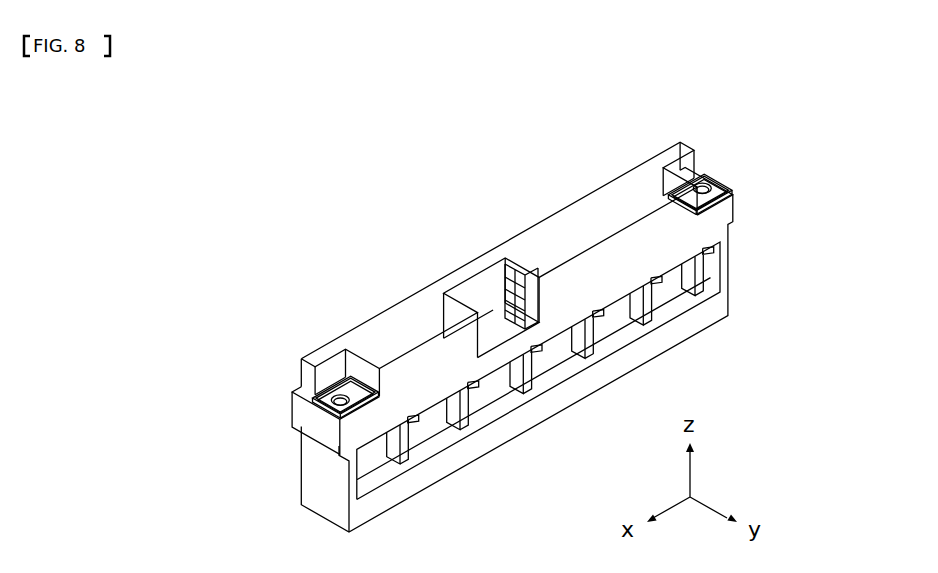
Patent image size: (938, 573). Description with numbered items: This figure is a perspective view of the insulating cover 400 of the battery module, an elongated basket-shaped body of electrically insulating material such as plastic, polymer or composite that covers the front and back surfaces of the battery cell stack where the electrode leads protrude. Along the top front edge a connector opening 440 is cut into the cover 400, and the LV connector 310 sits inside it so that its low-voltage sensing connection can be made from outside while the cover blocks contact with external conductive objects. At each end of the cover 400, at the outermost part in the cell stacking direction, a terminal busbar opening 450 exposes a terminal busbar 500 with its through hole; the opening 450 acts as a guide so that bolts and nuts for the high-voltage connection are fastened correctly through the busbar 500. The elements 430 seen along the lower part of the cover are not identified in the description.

The insulating cover 400 is at (561, 196).
The connector opening 440 is at (511, 268).
The LV connector 310 is at (506, 294).
The terminal busbar opening 450 is at (323, 404).
The terminal busbar 500 is at (342, 394).
The pin 430 is at (465, 404).